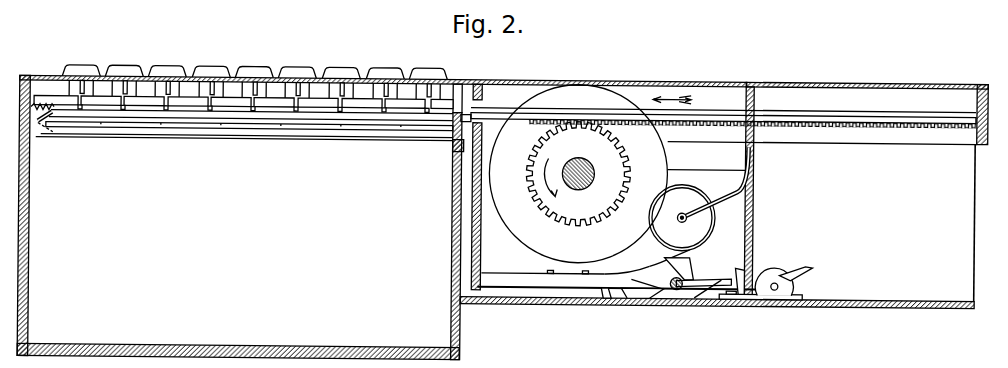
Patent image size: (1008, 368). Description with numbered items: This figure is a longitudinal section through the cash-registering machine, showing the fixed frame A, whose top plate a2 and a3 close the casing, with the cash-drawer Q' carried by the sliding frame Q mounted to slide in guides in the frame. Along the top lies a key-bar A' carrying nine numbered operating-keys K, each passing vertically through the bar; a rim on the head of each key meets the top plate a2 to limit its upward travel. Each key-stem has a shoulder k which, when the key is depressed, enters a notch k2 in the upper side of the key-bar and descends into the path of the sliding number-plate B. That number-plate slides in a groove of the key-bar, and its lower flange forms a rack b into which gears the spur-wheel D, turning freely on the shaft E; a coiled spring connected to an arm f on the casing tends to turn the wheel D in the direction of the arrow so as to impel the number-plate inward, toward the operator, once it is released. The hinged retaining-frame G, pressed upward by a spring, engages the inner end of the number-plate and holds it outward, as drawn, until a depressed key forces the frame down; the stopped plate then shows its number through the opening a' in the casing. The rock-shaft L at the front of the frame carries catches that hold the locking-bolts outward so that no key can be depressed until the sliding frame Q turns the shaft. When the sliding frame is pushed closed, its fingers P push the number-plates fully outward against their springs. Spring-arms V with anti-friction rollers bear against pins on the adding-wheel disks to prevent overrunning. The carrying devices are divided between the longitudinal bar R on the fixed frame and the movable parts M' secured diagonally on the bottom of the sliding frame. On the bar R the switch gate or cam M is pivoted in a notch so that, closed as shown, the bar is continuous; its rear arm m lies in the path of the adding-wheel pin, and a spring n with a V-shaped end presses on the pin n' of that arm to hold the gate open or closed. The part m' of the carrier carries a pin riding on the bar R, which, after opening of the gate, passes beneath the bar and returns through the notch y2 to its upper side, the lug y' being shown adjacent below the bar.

The fixed frame A is at (500, 220).
The top plate a2 is at (383, 72).
The top plate right section a3 is at (867, 76).
The opening a' is at (483, 82).
The key-bar A' is at (249, 117).
The operating-keys K is at (254, 63).
The shoulder or projection k is at (243, 94).
The notch k2 is at (123, 112).
The retaining-frame G is at (213, 142).
The rock-shaft L is at (41, 134).
The projecting fingers P is at (462, 146).
The sliding rack-plate or number-plate B is at (723, 108).
The rack b is at (897, 121).
The spur-wheel D is at (579, 174).
The shaft E is at (583, 174).
The arm f is at (706, 161).
The spring-arms V is at (699, 198).
The sliding frame Q is at (904, 222).
The cash-drawer Q' is at (238, 316).
The longitudinal bar R is at (616, 275).
The pin n' is at (626, 266).
The arm m is at (666, 257).
The spring n is at (680, 264).
The switch gate or cam M is at (700, 281).
The movable parts of the carrying devices M' is at (760, 278).
The part m' is at (797, 267).
The lug y' is at (612, 303).
The notch y2 is at (636, 297).